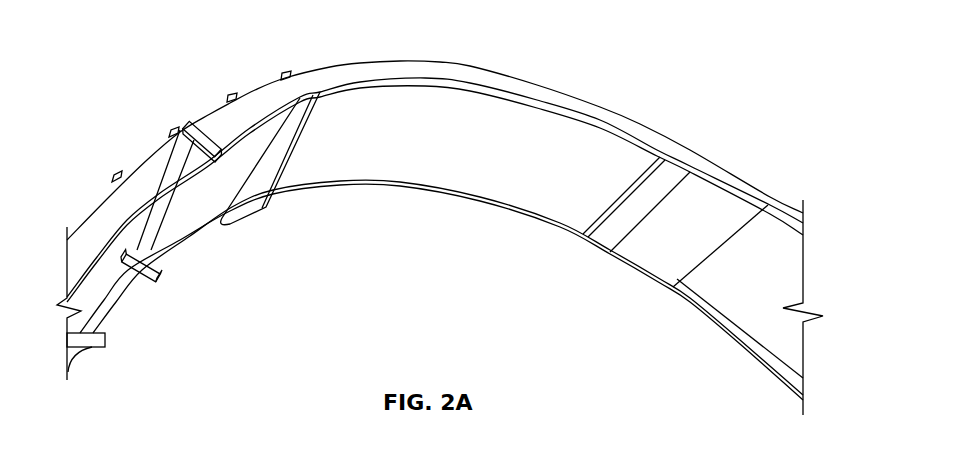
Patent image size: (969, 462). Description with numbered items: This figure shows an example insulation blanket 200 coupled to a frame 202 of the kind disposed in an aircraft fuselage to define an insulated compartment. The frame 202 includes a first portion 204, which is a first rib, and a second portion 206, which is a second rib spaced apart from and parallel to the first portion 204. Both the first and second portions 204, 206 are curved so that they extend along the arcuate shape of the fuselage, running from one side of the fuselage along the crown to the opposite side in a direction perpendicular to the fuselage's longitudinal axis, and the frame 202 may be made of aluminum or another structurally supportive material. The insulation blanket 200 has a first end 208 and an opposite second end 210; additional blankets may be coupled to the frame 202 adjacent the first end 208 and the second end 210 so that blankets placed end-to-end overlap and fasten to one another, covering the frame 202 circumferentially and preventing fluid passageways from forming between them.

The insulation blanket 200 is at (758, 50).
The frame 202 is at (112, 376).
The first portion 204 is at (134, 166).
The second portion 206 is at (130, 290).
The first end 208 is at (178, 208).
The second end 210 is at (722, 248).